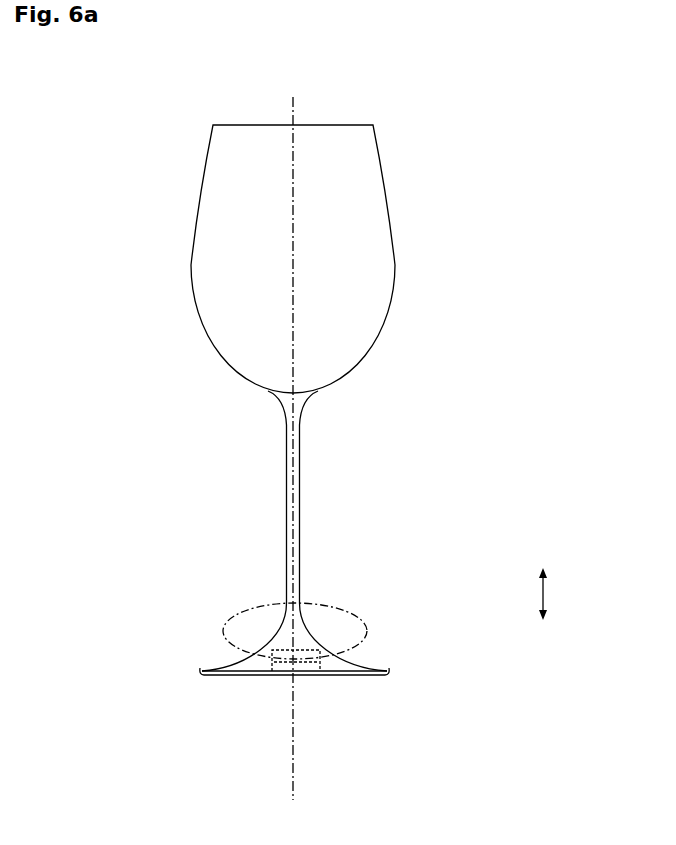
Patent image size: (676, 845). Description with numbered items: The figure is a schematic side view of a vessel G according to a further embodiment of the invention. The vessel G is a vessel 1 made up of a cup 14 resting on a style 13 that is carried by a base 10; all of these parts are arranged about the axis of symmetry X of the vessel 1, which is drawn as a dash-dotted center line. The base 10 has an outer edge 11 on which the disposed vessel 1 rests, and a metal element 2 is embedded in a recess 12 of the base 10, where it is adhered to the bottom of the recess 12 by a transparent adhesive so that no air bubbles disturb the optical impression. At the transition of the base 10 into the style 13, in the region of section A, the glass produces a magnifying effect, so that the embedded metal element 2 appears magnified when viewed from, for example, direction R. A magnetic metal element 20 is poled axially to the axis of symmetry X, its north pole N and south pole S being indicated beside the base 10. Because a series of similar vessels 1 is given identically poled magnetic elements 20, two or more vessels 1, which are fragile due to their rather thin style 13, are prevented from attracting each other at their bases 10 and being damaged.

The vessel 1 is at (192, 283).
The metal element 2 is at (301, 672).
The base 10 is at (230, 662).
The outer edge 11 is at (202, 672).
The recess 12 is at (272, 672).
The style 13 is at (293, 497).
The cup 14 is at (358, 335).
The magnetic metal element 20 is at (313, 661).
The vessel G is at (101, 145).
The direction R is at (574, 330).
The section A is at (366, 625).
The axis of symmetry X is at (292, 451).
The north pole N is at (552, 594).
The south pole S is at (557, 610).